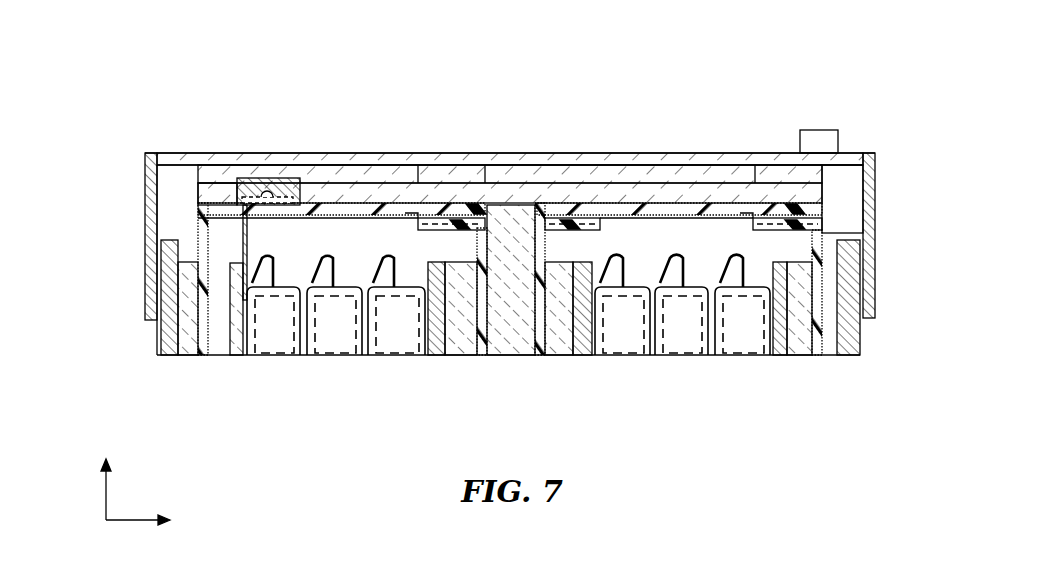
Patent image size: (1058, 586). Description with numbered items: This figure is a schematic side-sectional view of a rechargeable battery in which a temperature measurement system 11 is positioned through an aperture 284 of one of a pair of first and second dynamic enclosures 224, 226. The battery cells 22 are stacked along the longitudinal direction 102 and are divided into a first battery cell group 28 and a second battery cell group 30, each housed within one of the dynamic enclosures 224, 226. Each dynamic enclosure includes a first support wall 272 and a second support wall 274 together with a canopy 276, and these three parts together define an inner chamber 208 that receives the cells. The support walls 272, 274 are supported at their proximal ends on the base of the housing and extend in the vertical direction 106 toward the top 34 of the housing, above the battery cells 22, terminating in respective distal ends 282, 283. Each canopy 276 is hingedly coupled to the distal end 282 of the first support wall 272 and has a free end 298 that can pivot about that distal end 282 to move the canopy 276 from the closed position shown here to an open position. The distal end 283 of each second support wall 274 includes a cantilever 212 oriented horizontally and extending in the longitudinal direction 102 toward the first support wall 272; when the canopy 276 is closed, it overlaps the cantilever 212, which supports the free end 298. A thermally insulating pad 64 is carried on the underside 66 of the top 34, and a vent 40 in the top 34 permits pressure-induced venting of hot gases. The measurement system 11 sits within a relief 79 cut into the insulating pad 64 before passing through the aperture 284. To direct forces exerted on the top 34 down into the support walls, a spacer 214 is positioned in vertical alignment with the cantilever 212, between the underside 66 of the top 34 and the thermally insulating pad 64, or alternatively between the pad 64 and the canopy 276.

The measurement system 11 is at (265, 178).
The battery cells 22 is at (322, 336).
The first battery cell group 28 is at (331, 365).
The second battery cell group 30 is at (685, 365).
The top 34 is at (163, 152).
The vent 40 is at (822, 130).
The thermally insulating pad 64 is at (198, 203).
The underside 66 is at (650, 163).
The relief 79 is at (228, 180).
The longitudinal direction 102 is at (161, 520).
The vertical direction 106 is at (107, 476).
The inner chamber 208 is at (223, 233).
The cantilever 212 is at (405, 213).
The spacer 214 is at (420, 176).
The first dynamic enclosure 224 is at (320, 195).
The second dynamic enclosure 226 is at (690, 195).
The first support wall 272 is at (204, 357).
The second support wall 274 is at (482, 357).
The canopy 276 is at (300, 203).
The distal end of first support wall 282 is at (185, 222).
The distal end of second support wall 283 is at (500, 215).
The aperture 284 is at (252, 217).
The free end 298 is at (477, 203).